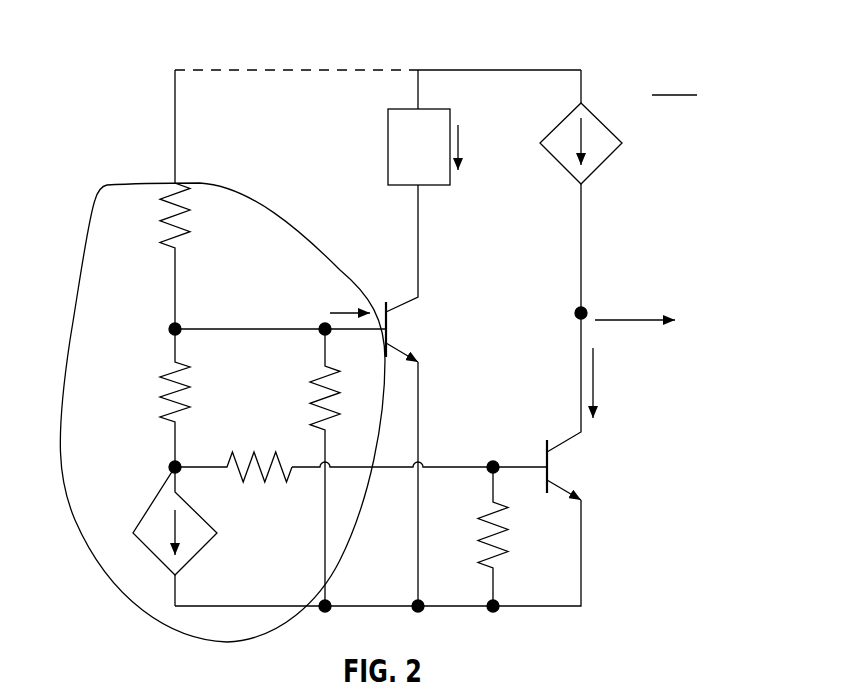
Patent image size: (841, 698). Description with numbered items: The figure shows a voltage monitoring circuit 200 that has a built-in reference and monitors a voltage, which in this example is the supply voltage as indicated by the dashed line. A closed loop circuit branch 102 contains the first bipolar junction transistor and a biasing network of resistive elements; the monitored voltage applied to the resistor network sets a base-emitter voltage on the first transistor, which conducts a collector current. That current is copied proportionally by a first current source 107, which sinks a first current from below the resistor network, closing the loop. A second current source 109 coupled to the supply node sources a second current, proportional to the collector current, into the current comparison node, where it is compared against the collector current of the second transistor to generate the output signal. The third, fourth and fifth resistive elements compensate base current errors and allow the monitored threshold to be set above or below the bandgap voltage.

The voltage monitoring circuit 200 is at (126, 26).
The closed loop circuit branch 102 is at (212, 186).
The first current source 107 is at (152, 510).
The second current source 109 is at (558, 120).